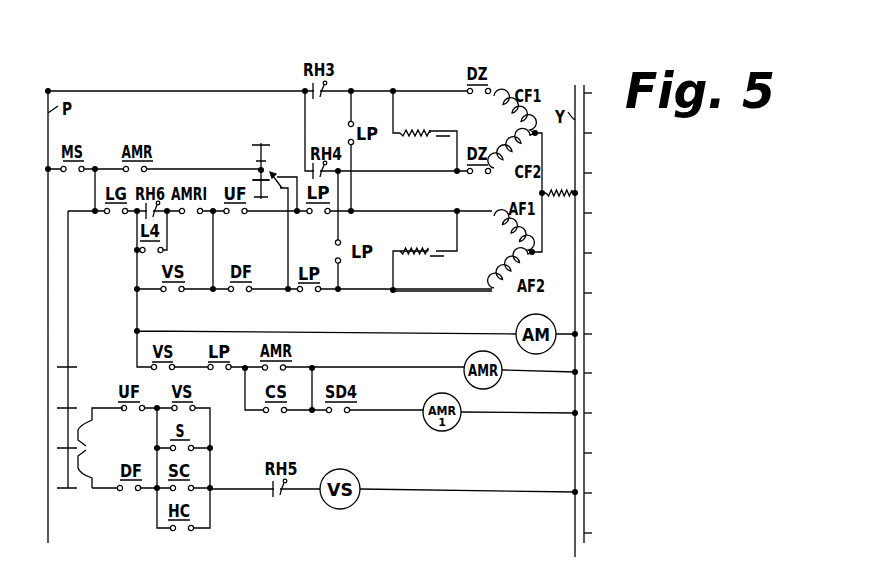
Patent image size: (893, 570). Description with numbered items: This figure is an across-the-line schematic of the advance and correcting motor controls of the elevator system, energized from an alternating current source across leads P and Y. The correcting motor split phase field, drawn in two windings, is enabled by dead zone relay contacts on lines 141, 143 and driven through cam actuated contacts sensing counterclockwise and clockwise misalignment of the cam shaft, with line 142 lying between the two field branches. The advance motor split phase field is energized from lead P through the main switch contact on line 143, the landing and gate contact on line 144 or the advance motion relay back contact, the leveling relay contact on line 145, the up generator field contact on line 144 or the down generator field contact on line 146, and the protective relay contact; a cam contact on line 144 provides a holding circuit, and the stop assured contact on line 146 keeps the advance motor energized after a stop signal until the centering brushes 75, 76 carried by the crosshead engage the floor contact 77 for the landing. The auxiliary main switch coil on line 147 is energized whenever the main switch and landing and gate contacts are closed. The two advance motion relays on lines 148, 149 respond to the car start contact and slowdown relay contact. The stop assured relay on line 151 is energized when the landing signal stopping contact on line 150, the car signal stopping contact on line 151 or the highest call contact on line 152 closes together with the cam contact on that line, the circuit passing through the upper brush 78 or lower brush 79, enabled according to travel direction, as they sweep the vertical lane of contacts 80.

The centering brush 75 is at (278, 174).
The centering brush 76 is at (279, 230).
The floor contact 77 is at (258, 177).
The upper brush 78 is at (86, 442).
The lower brush 79 is at (86, 466).
The vertical lane of contacts 80 is at (74, 405).
The line 141 is at (602, 93).
The line 142 is at (602, 133).
The line 143 is at (602, 173).
The line 144 is at (602, 213).
The line 145 is at (602, 253).
The line 146 is at (602, 293).
The line 147 is at (640, 334).
The line 148 is at (732, 385).
The line 149 is at (825, 425).
The line 150 is at (602, 453).
The line 151 is at (764, 505).
The line 152 is at (602, 533).